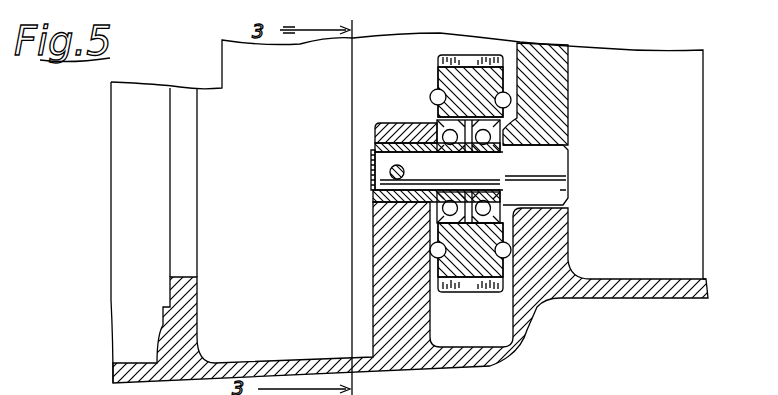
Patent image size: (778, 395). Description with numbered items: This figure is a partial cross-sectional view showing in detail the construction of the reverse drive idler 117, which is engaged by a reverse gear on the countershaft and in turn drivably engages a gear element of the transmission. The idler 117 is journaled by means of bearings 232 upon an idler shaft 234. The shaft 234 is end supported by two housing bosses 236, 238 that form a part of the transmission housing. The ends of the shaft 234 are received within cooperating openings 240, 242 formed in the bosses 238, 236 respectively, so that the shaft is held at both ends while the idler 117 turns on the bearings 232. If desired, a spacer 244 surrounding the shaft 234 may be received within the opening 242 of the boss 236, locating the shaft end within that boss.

The reverse drive idler 117 is at (440, 62).
The bearings 232 is at (437, 135).
The idler shaft 234 is at (386, 180).
The housing boss 236 is at (374, 222).
The housing boss 238 is at (562, 84).
The opening 240 is at (548, 147).
The opening 242 is at (376, 146).
The spacer 244 is at (372, 158).